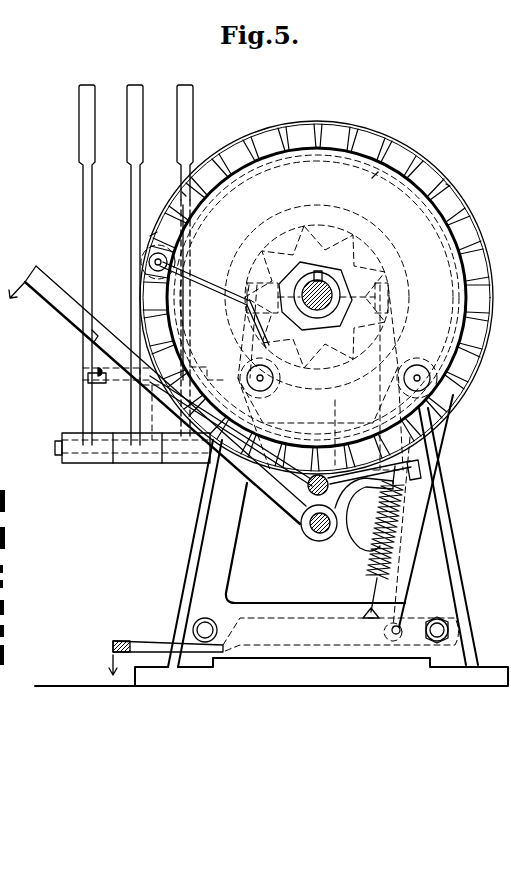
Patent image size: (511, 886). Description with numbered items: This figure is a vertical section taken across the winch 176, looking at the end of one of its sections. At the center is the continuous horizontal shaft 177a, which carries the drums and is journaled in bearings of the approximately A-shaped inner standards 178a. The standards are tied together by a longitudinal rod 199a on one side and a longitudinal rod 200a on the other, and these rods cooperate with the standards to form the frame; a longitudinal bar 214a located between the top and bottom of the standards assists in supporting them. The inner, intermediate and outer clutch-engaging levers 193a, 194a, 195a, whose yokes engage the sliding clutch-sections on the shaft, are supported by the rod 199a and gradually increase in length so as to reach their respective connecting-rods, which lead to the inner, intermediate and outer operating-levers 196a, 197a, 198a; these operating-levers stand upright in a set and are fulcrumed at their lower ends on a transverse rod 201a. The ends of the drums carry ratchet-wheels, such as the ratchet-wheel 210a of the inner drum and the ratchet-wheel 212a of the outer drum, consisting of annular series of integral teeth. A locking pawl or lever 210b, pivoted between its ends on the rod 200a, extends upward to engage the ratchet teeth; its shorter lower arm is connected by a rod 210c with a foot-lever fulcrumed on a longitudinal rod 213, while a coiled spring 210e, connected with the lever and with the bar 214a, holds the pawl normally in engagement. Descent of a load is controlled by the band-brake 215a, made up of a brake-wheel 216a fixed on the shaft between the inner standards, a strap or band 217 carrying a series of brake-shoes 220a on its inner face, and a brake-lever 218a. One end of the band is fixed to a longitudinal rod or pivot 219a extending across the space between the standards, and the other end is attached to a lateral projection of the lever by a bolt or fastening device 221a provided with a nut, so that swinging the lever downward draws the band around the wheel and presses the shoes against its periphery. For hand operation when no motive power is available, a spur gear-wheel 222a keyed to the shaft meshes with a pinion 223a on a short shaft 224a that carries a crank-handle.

The winch 176 is at (274, 130).
The horizontal shaft 177a is at (324, 278).
The inner standards 178a is at (207, 529).
The inner clutch-engaging lever 193a is at (216, 376).
The intermediate clutch-engaging lever 194a is at (163, 412).
The outer clutch-engaging lever 195a is at (96, 388).
The inner operating-lever 196a is at (192, 88).
The intermediate operating-lever 197a is at (134, 87).
The outer operating-lever 198a is at (79, 128).
The longitudinal rod 199a is at (269, 388).
The longitudinal rod 200a is at (404, 346).
The transverse rod 201a is at (55, 448).
The ratchet-wheel 210a is at (304, 233).
The locking pawl or lever 210b is at (398, 322).
The rod 210c is at (436, 464).
The coiled spring 210e is at (368, 565).
The ratchet-wheel 212a is at (142, 642).
The longitudinal rod 213 is at (449, 628).
The longitudinal bar 214a is at (436, 482).
The band-brake 215a is at (447, 184).
The brake-wheel 216a is at (374, 177).
The strap or band 217 is at (473, 238).
The brake-lever 218a is at (60, 302).
The longitudinal rod or pivot 219a is at (306, 538).
The brake-shoes 220a is at (374, 141).
The bolt or fastening device 221a is at (292, 484).
The spur gear-wheel 222a is at (182, 192).
The pinion 223a is at (150, 236).
The short shaft 224a is at (148, 262).